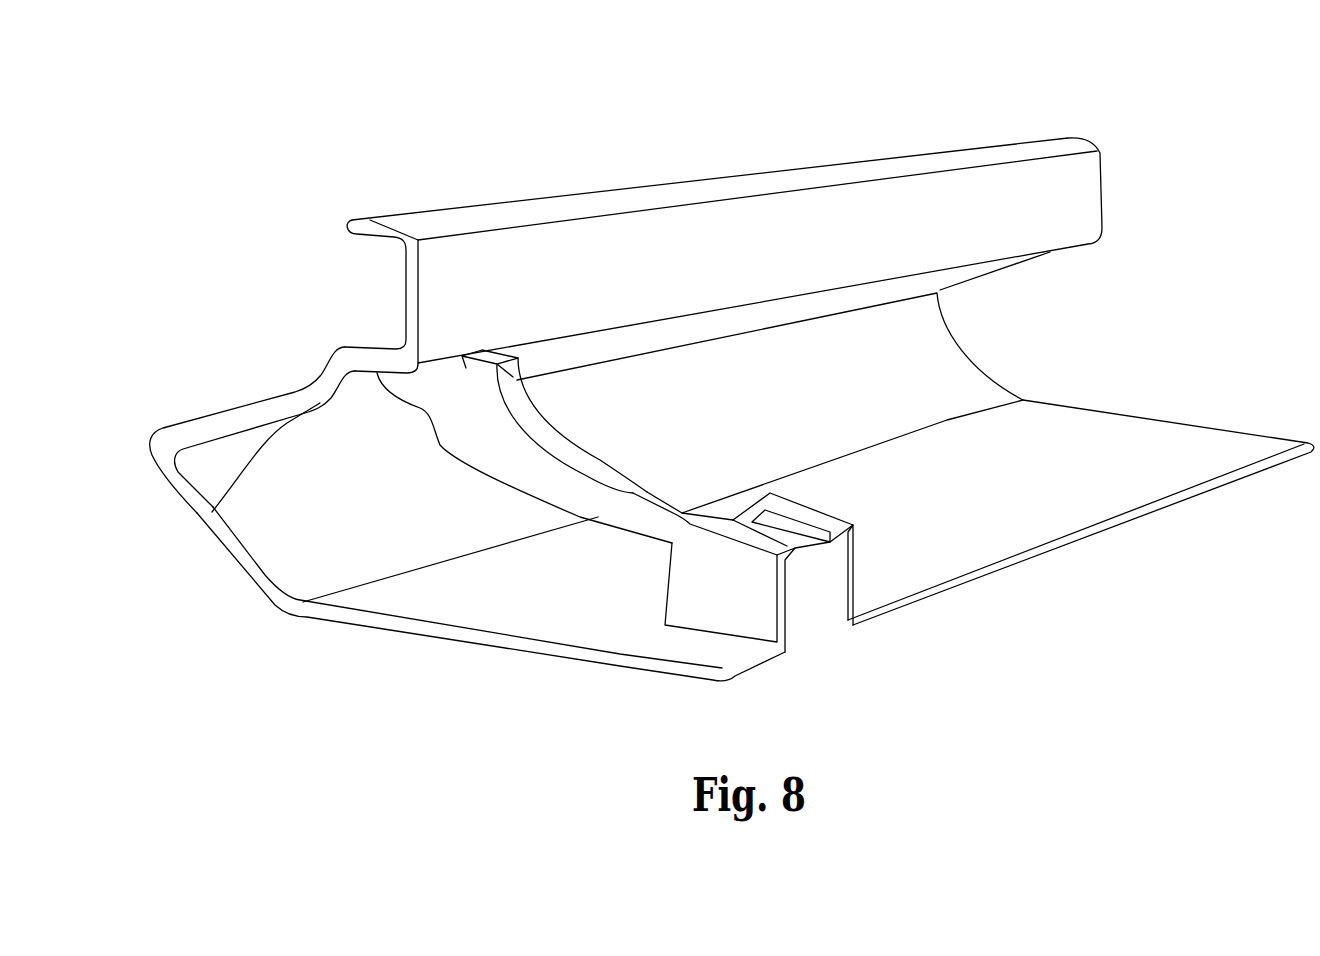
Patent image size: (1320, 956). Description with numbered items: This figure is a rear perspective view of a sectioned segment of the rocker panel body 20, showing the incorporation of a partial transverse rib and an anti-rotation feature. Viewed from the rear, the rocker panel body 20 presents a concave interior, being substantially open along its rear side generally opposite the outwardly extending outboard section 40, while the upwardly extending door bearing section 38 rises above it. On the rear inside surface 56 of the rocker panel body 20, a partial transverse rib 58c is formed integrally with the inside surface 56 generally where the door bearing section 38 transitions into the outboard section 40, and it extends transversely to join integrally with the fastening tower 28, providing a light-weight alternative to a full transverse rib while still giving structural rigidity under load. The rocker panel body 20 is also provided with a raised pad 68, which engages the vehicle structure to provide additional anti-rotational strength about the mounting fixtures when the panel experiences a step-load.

The rocker panel body 20 is at (808, 229).
The door bearing section 38 is at (408, 300).
The outboard section 40 is at (162, 437).
The inside surface 56 is at (205, 520).
The partial transverse rib 58c is at (473, 450).
The raised pad 68 is at (658, 496).
The fastening tower 28 is at (803, 515).